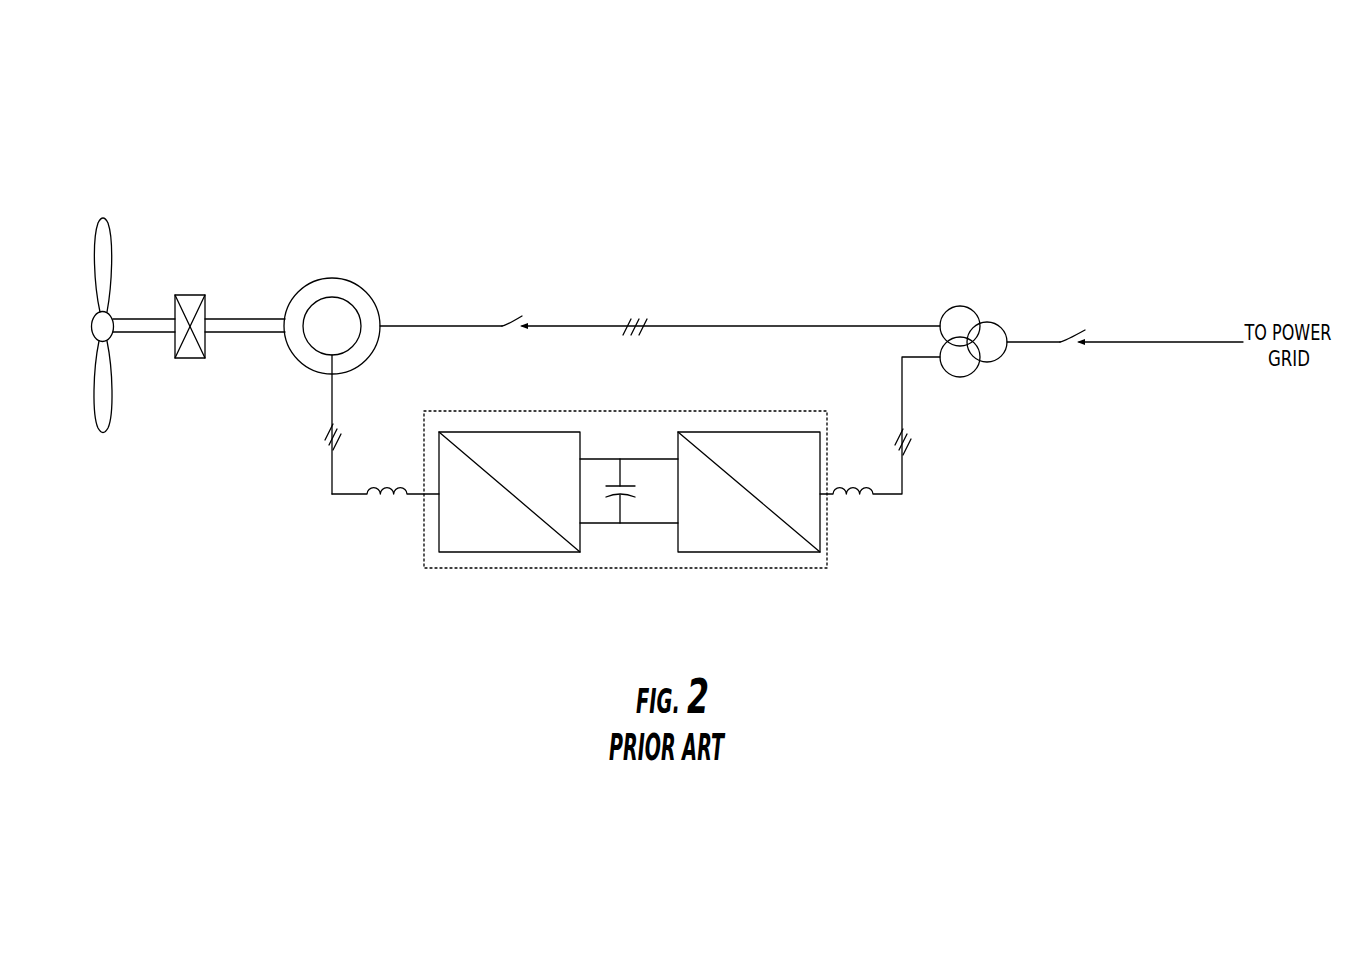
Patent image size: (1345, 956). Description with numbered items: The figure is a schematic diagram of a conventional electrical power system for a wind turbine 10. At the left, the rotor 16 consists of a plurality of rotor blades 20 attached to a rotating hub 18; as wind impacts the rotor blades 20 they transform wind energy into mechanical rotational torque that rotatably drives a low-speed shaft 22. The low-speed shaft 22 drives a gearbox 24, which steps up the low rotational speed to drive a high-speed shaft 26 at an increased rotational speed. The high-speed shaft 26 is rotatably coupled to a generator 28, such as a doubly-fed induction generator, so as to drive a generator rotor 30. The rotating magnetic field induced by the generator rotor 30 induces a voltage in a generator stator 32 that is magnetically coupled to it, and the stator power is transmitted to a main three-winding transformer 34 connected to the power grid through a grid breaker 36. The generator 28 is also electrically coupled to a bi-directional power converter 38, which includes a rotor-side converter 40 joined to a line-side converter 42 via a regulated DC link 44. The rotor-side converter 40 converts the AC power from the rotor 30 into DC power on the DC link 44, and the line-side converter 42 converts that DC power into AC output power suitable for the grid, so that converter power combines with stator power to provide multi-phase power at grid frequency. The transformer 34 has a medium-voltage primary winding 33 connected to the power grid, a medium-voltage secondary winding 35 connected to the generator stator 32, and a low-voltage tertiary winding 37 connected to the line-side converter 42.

The wind turbine 10 is at (108, 192).
The rotor 16 is at (74, 336).
The rotating hub 18 is at (91, 330).
The rotor blades 20 is at (106, 256).
The low-speed shaft 22 is at (130, 333).
The gearbox 24 is at (185, 294).
The high-speed shaft 26 is at (222, 333).
The generator 28 is at (330, 267).
The generator rotor 30 is at (356, 306).
The generator stator 32 is at (317, 374).
The primary winding 33 is at (994, 361).
The three-winding transformer 34 is at (986, 272).
The secondary winding 35 is at (941, 319).
The grid breaker 36 is at (1092, 326).
The tertiary winding 37 is at (967, 376).
The bi-directional power converter 38 is at (649, 402).
The rotor-side converter 40 is at (493, 553).
The line-side converter 42 is at (765, 553).
The DC link 44 is at (633, 515).